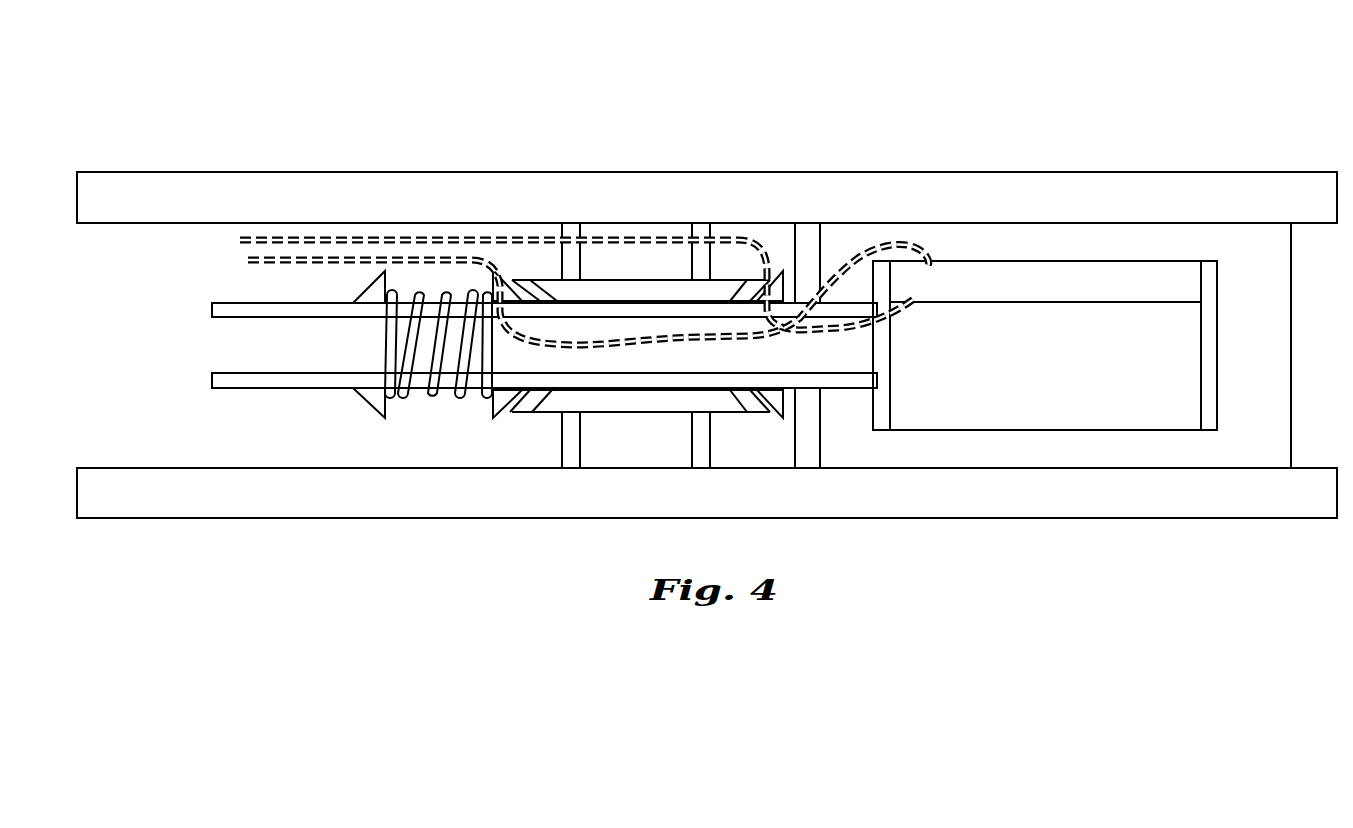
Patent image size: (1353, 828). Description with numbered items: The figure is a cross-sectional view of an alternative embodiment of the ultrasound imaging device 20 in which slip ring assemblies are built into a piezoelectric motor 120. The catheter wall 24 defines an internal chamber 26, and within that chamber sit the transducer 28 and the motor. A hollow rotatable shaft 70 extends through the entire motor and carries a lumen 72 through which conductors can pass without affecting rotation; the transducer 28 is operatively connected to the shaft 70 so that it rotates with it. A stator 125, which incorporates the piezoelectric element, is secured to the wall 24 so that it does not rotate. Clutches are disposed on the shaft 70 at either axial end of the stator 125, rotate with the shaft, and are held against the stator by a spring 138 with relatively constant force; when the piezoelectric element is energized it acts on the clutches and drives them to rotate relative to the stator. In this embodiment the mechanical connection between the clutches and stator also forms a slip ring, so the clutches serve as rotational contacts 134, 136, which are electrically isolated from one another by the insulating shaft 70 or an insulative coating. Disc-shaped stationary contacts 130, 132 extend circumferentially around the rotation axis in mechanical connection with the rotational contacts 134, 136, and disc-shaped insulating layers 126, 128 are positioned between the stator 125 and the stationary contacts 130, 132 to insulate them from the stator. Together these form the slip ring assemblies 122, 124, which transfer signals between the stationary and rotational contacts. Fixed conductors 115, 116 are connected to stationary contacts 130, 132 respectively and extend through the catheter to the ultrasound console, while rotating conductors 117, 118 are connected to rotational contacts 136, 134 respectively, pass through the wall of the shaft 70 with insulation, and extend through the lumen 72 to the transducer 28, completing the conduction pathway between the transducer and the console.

The device 20 is at (706, 148).
The wall 24 is at (582, 205).
The internal chamber 26 is at (1258, 256).
The transducer 28 is at (1050, 245).
The shaft 70 is at (222, 303).
The lumen 72 is at (243, 373).
The fixed conductor 115 is at (307, 240).
The fixed conductor 116 is at (262, 260).
The rotating conductor 117 is at (917, 247).
The rotating conductor 118 is at (850, 337).
The piezoelectric motor 120 is at (686, 237).
The slip ring assembly 122 is at (783, 250).
The slip ring assembly 124 is at (471, 250).
The stator 125 is at (625, 290).
The insulating layer 126 is at (750, 283).
The insulating layer 128 is at (531, 283).
The stationary contact 130 is at (763, 283).
The stationary contact 132 is at (517, 280).
The rotational contact 134 is at (781, 293).
The rotational contact 136 is at (493, 287).
The spring 138 is at (420, 365).